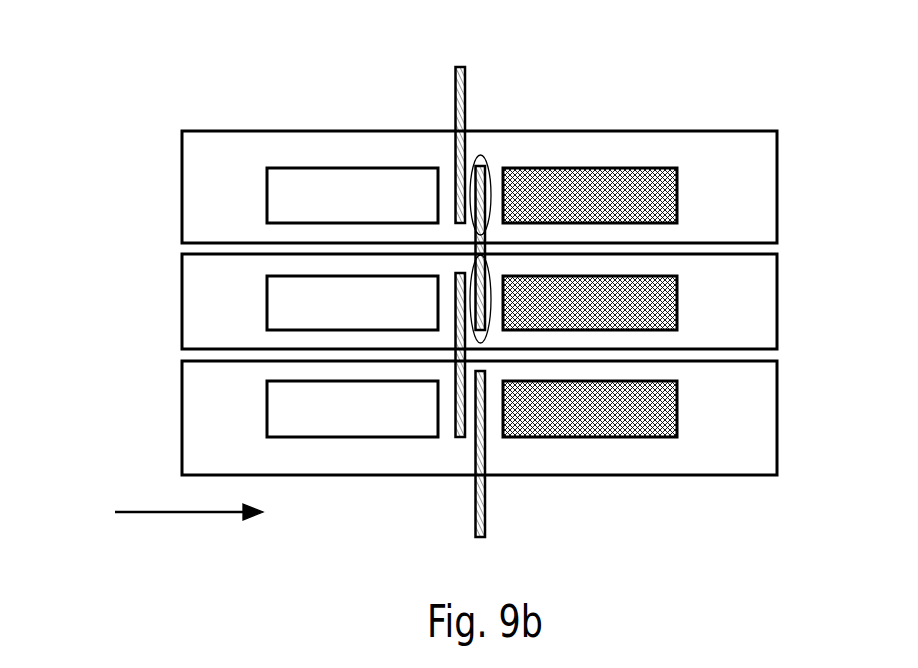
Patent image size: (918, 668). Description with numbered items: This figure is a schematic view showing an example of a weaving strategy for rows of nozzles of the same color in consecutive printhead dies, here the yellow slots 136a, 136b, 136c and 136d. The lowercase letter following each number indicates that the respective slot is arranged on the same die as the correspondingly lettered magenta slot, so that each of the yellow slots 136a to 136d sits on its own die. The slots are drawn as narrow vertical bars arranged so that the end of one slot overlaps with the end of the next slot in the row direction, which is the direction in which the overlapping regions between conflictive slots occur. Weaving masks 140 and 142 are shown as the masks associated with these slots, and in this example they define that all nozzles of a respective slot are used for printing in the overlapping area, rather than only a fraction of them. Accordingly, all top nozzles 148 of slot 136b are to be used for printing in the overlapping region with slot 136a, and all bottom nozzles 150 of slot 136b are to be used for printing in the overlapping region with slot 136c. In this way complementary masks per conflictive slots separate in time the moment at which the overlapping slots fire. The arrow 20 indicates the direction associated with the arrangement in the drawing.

The flow direction 20 is at (187, 515).
The yellow slot 136a is at (466, 84).
The yellow slot 136b is at (483, 169).
The yellow slot 136c is at (456, 431).
The yellow slot 136d is at (488, 519).
The weaving mask 140 is at (641, 167).
The weaving mask 142 is at (325, 167).
The top nozzles 148 is at (472, 163).
The bottom nozzles 150 is at (471, 270).